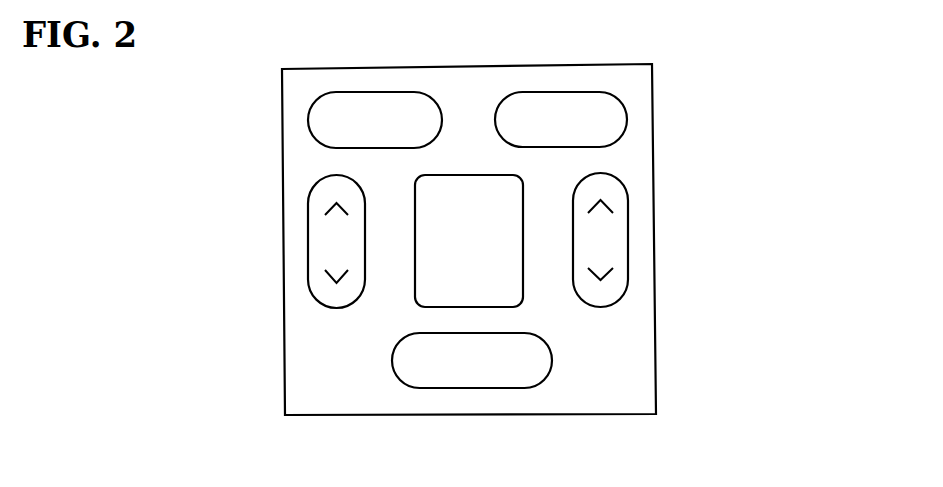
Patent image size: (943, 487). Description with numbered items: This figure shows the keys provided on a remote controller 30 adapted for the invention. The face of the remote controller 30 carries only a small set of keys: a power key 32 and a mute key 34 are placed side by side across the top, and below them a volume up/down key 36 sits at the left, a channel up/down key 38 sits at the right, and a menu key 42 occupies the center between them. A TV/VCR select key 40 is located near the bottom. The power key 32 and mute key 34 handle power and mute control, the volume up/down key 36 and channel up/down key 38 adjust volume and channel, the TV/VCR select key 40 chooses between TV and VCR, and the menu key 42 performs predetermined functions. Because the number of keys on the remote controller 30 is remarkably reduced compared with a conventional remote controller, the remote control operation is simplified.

The remote controller 30 is at (653, 79).
The power key 32 is at (373, 92).
The mute key 34 is at (565, 92).
The volume up/down key 36 is at (308, 239).
The channel up/down key 38 is at (628, 237).
The TV/VCR select key 40 is at (466, 388).
The menu key 42 is at (523, 285).